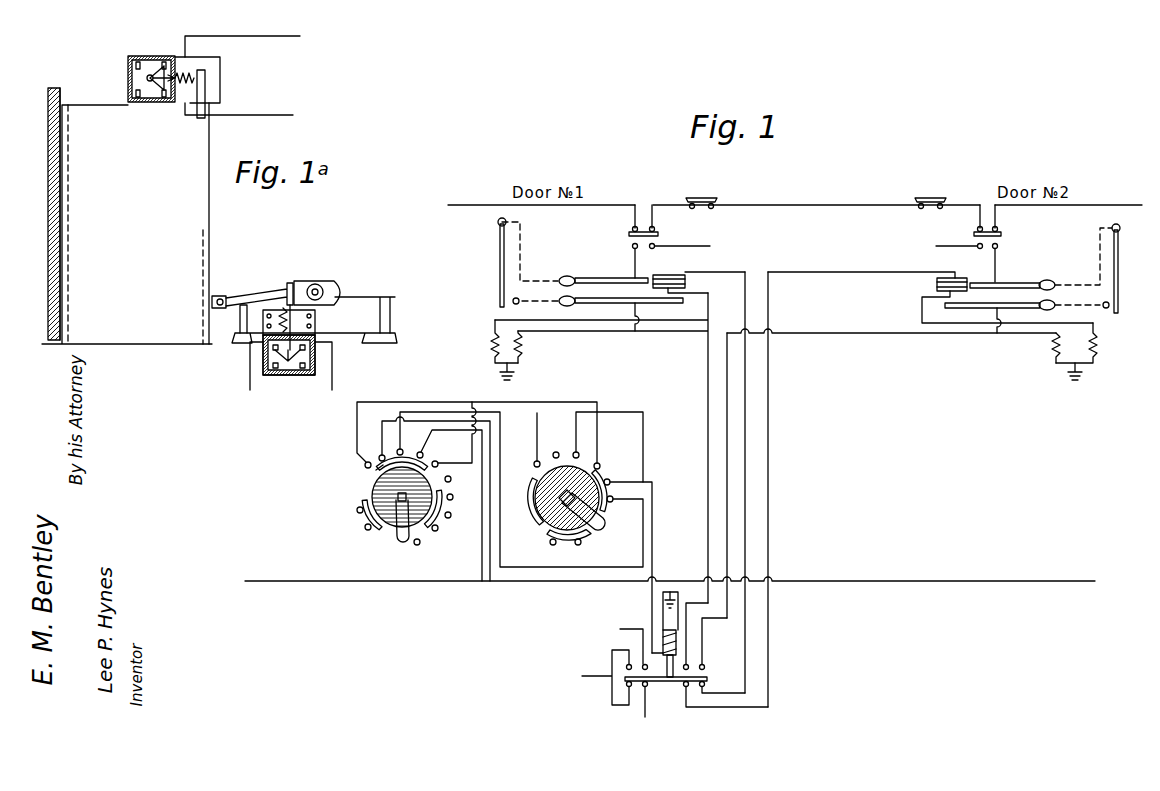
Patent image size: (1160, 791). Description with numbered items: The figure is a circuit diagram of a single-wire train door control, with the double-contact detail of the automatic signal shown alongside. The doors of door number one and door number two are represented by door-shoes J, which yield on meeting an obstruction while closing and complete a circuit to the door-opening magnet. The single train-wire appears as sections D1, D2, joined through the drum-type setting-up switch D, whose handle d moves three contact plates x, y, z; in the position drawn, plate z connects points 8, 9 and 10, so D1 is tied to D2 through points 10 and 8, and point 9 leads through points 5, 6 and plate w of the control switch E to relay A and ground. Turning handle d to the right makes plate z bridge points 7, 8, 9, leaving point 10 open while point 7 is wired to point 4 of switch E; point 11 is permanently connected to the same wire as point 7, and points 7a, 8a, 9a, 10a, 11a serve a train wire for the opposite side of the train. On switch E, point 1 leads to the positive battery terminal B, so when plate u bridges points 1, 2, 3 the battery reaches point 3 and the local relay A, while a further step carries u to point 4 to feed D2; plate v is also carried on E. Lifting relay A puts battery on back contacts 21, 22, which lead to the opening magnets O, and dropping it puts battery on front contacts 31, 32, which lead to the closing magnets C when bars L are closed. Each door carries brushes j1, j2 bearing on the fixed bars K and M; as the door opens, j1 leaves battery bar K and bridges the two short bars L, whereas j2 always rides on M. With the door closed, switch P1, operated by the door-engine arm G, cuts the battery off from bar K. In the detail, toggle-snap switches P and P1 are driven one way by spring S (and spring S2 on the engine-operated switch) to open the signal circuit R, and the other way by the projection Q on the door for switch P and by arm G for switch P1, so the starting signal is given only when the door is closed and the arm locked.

In FIG. 1A, the switch P is at (151, 68).
In FIG. 1, the switch P is at (816, 213).
In FIG. 1A, the switch P1 is at (290, 378).
In FIG. 1, the switch P1 is at (825, 243).
In FIG. 1A, the signal circuit R is at (242, 35).
In FIG. 1, the signal circuit R is at (753, 205).
In FIG. 1A, the spring S is at (186, 72).
In FIG. 1A, the spring S2 is at (300, 316).
In FIG. 1A, the projection Q is at (205, 92).
In FIG. 1A, the door-shoe J is at (50, 184).
In FIG. 1, the door-shoe J is at (802, 265).
In FIG. 1A, the door-engine arm G is at (248, 296).
In FIG. 1A, the bar K is at (351, 387).
In FIG. 1, the bar K is at (807, 274).
In FIG. 1A, the battery B is at (226, 397).
In FIG. 1, the battery B is at (752, 463).
In FIG. 1, the contact brush j1 is at (565, 278).
In FIG. 1, the contact brush j2 is at (562, 306).
In FIG. 1, the contact bars L is at (873, 297).
In FIG. 1, the bar M is at (807, 315).
In FIG. 1, the door-closing magnet C is at (790, 341).
In FIG. 1, the door-opening magnet O is at (787, 347).
In FIG. 1, the setting-up switch D is at (384, 482).
In FIG. 1, the train-wire section D1 is at (670, 565).
In FIG. 1, the train-wire section D2 is at (865, 565).
In FIG. 1, the control switch E is at (595, 485).
In FIG. 1, the contact point 1 is at (531, 443).
In FIG. 1, the contact point 2 is at (551, 451).
In FIG. 1, the contact point 3 is at (604, 447).
In FIG. 1, the contact point 4 is at (593, 462).
In FIG. 1, the contact point 5 is at (628, 560).
In FIG. 1, the contact point 6 is at (614, 494).
In FIG. 1, the contact point 7 is at (474, 437).
In FIG. 1, the contact point 8 is at (431, 499).
In FIG. 1, the contact point 9 is at (516, 489).
In FIG. 1, the contact point 10 is at (445, 505).
In FIG. 1, the contact point 11 is at (452, 434).
In FIG. 1, the contact point 7a is at (455, 480).
In FIG. 1, the contact point 8a is at (457, 498).
In FIG. 1, the contact point 9a is at (456, 516).
In FIG. 1, the contact point 10a is at (447, 531).
In FIG. 1, the contact point 11a is at (418, 550).
In FIG. 1, the contact plate x is at (362, 513).
In FIG. 1, the contact plate z is at (376, 470).
In FIG. 1, the handle d is at (398, 541).
In FIG. 1, the contact plate y is at (439, 531).
In FIG. 1, the contact plate u is at (530, 510).
In FIG. 1, the contact segment v is at (567, 535).
In FIG. 1, the contact plate w is at (609, 505).
In FIG. 1, the relay A is at (644, 654).
In FIG. 1, the back contact point 21 is at (690, 664).
In FIG. 1, the back contact point 22 is at (705, 667).
In FIG. 1, the front contact point 31 is at (684, 687).
In FIG. 1, the front contact point 32 is at (701, 688).